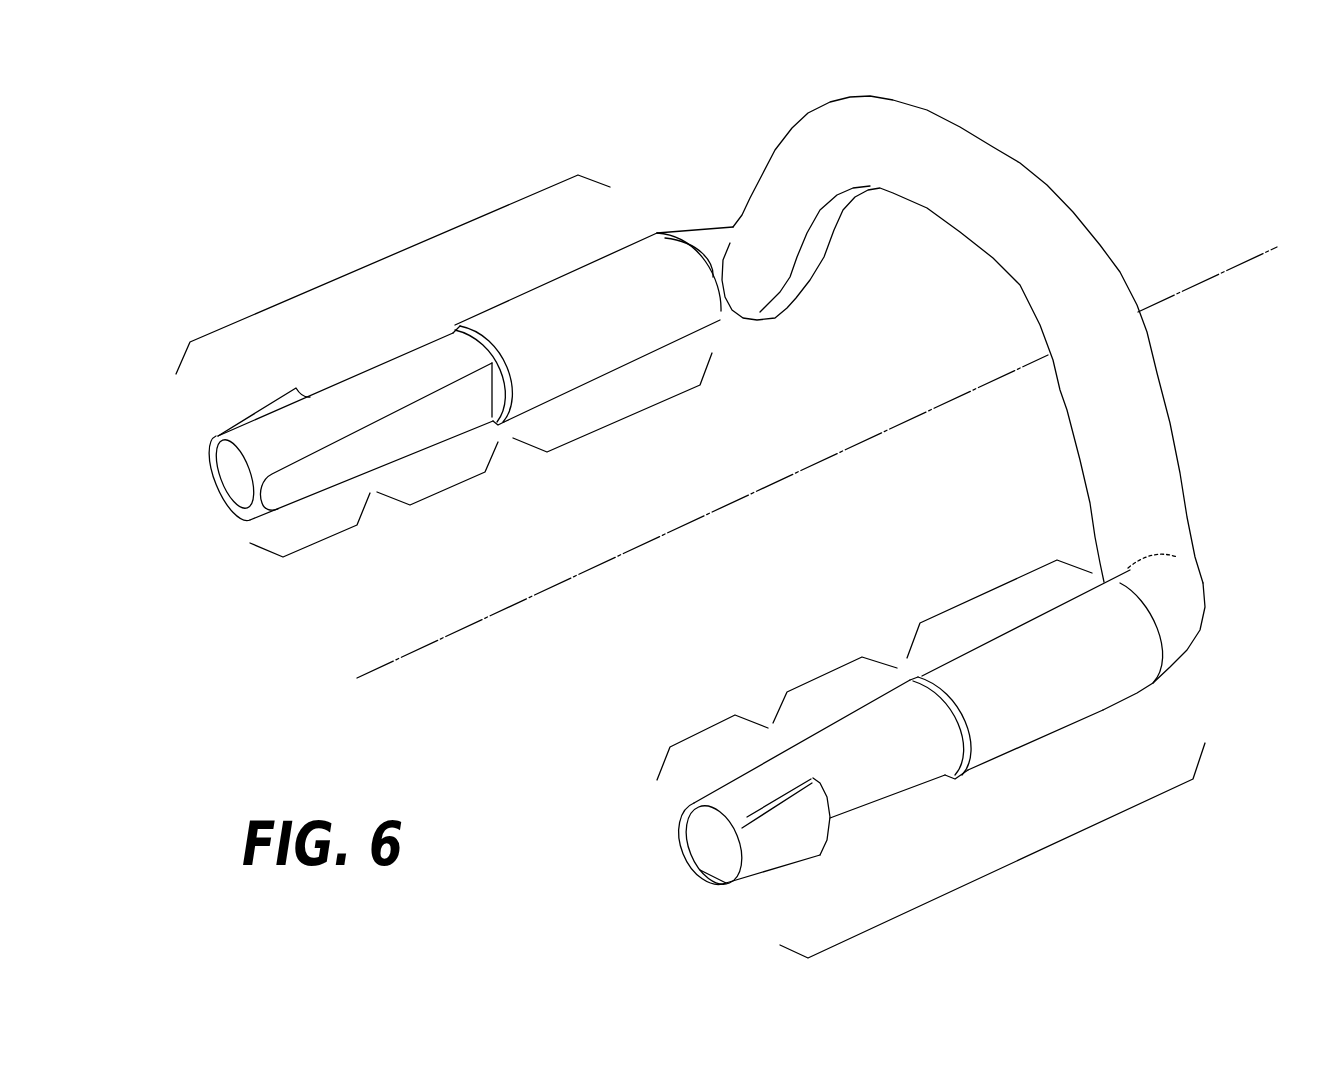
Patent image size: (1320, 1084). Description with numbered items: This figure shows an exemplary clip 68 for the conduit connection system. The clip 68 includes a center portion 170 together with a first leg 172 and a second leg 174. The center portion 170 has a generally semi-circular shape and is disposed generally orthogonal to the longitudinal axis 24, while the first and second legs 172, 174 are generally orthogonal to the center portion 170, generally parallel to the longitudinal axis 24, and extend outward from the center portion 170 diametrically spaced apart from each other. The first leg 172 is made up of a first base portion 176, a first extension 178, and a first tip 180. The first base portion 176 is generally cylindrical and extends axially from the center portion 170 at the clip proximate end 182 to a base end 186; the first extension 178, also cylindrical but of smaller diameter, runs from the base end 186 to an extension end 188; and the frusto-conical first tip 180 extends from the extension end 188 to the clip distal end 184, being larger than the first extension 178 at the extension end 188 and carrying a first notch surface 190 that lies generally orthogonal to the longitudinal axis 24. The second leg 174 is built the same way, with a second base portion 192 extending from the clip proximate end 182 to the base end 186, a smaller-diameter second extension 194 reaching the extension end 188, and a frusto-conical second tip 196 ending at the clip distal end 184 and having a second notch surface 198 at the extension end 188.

The longitudinal axis 24 is at (1243, 260).
The clip 68 is at (1030, 86).
The center portion 170 is at (990, 177).
The first leg 172 is at (1010, 866).
The second leg 174 is at (390, 258).
The first base portion 176 is at (990, 592).
The first extension 178 is at (833, 670).
The first tip 180 is at (703, 723).
The clip proximate end 182 is at (1224, 405).
The clip distal end 184 is at (189, 466).
The base end 186 is at (505, 449).
The extension end 188 is at (320, 378).
The first notch surface 190 is at (832, 820).
The second base portion 192 is at (628, 420).
The second extension 194 is at (446, 493).
The second tip 196 is at (325, 548).
The second notch surface 198 is at (312, 390).